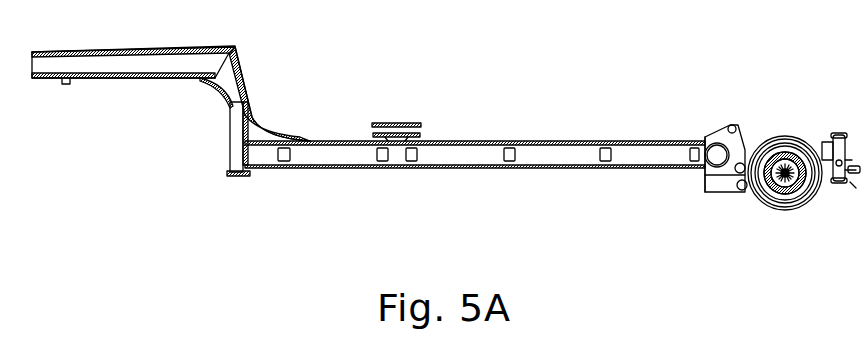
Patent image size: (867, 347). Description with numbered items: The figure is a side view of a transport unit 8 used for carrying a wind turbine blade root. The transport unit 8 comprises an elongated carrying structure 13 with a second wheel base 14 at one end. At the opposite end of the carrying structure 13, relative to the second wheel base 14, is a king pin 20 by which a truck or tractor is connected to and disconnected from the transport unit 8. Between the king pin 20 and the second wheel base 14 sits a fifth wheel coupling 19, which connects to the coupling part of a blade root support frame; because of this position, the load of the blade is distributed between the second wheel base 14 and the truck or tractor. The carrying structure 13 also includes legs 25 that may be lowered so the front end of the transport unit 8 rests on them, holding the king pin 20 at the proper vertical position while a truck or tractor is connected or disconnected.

The transport unit 8 is at (448, 78).
The carrying structure 13 is at (438, 168).
The second wheel base 14 is at (760, 203).
The fifth wheel coupling 19 is at (410, 120).
The king pin 20 is at (66, 82).
The legs 25 is at (240, 176).